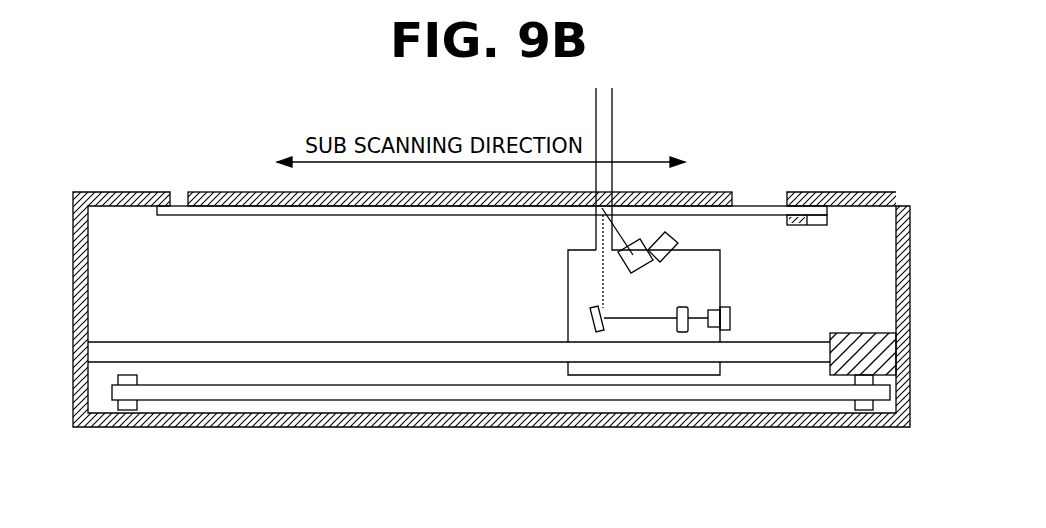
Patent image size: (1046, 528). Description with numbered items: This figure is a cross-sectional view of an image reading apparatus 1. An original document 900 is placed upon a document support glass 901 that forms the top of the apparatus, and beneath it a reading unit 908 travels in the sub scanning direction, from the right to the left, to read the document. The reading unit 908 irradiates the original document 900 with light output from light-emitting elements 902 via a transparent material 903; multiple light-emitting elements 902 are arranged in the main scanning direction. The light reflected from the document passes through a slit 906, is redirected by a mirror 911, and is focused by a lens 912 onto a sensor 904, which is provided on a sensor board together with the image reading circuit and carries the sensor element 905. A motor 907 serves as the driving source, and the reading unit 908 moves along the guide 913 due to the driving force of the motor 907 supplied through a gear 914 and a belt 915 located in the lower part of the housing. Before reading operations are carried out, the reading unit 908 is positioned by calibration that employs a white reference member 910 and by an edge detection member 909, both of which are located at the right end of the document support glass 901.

The image reading apparatus housing 1 is at (105, 192).
The original document 900 is at (207, 192).
The document support glass 901 is at (178, 217).
The light-emitting elements 902 is at (668, 238).
The transparent material 903 is at (638, 247).
The sensor 904 is at (714, 309).
The image sensor 905 is at (732, 315).
The slit 906 is at (595, 250).
The motor 907 is at (872, 333).
The reading unit 908 is at (568, 281).
The edge detection member 909 is at (800, 213).
The white reference member 910 is at (823, 213).
The mirror 911 is at (590, 326).
The lens 912 is at (682, 308).
The guide rail 913 is at (820, 338).
The gear 914 is at (845, 382).
The belt 915 is at (708, 402).